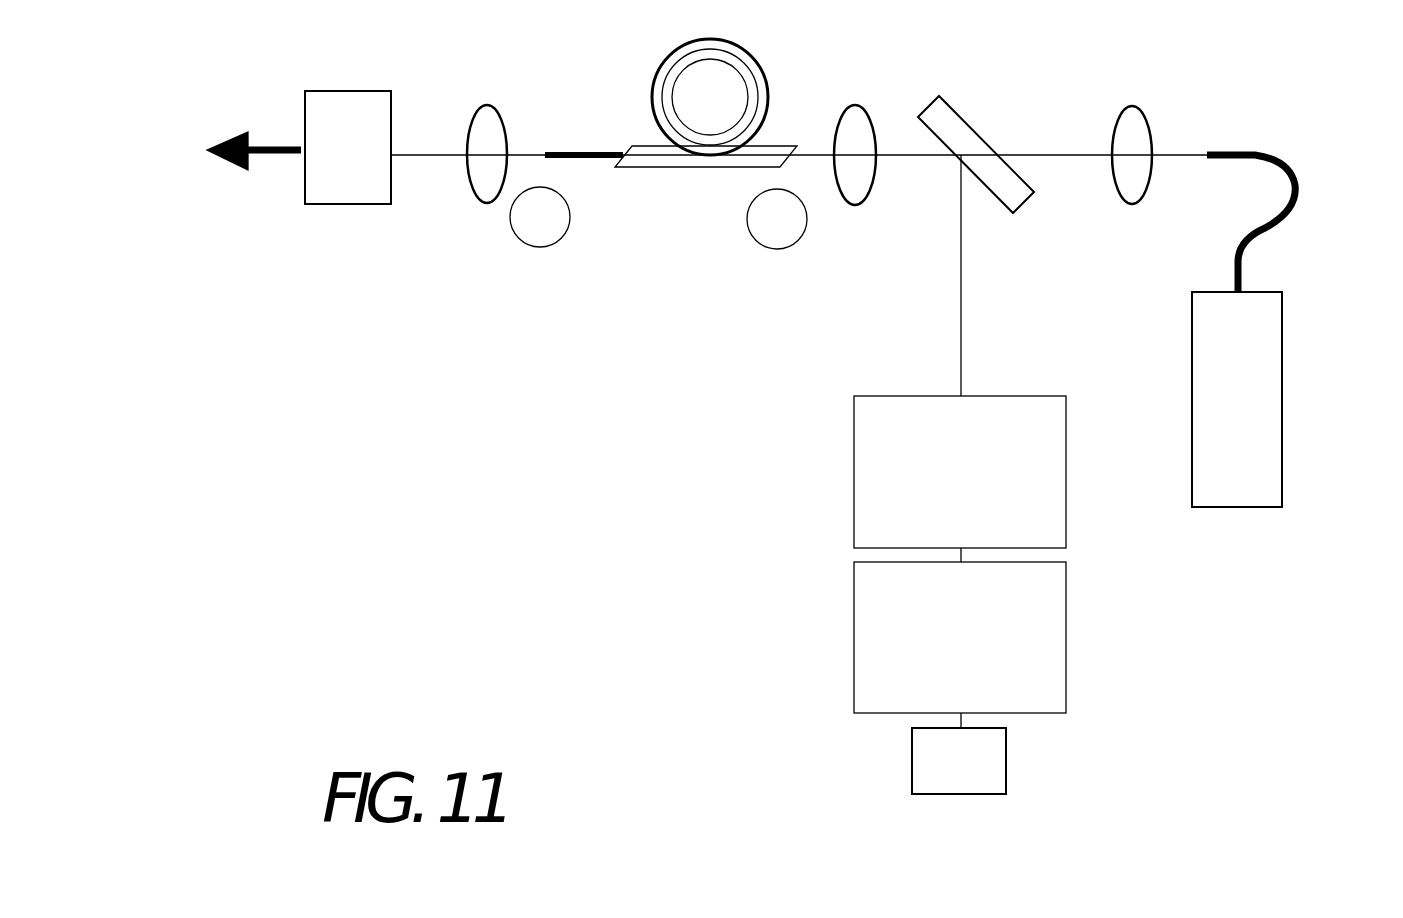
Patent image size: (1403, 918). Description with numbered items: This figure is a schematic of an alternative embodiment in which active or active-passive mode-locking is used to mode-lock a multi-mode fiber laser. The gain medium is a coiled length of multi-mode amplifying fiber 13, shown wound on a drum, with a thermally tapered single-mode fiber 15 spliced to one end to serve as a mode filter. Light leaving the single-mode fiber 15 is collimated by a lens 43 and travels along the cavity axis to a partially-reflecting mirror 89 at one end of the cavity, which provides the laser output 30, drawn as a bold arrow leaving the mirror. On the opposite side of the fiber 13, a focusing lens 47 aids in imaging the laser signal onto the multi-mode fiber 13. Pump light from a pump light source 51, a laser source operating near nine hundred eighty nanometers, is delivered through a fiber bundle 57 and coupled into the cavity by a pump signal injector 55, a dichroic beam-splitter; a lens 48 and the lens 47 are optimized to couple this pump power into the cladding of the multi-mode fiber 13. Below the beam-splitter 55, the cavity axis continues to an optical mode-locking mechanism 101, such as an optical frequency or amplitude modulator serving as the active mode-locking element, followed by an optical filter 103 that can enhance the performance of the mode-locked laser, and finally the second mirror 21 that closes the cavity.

The multi-mode amplifying fiber 13 is at (765, 78).
The single-mode fiber 15 is at (572, 163).
The second mirror 21 is at (1006, 758).
The output 30 is at (268, 156).
The lens 43 is at (487, 105).
The focusing lens 47 is at (855, 105).
The lens 48 is at (1132, 108).
The pump light source 51 is at (1282, 416).
The pump signal injector 55 is at (963, 110).
The fiber bundle 57 is at (1283, 162).
The partially-reflecting mirror 89 is at (345, 91).
The optical mode-locking mechanism 101 is at (854, 472).
The optical filter 103 is at (1066, 637).